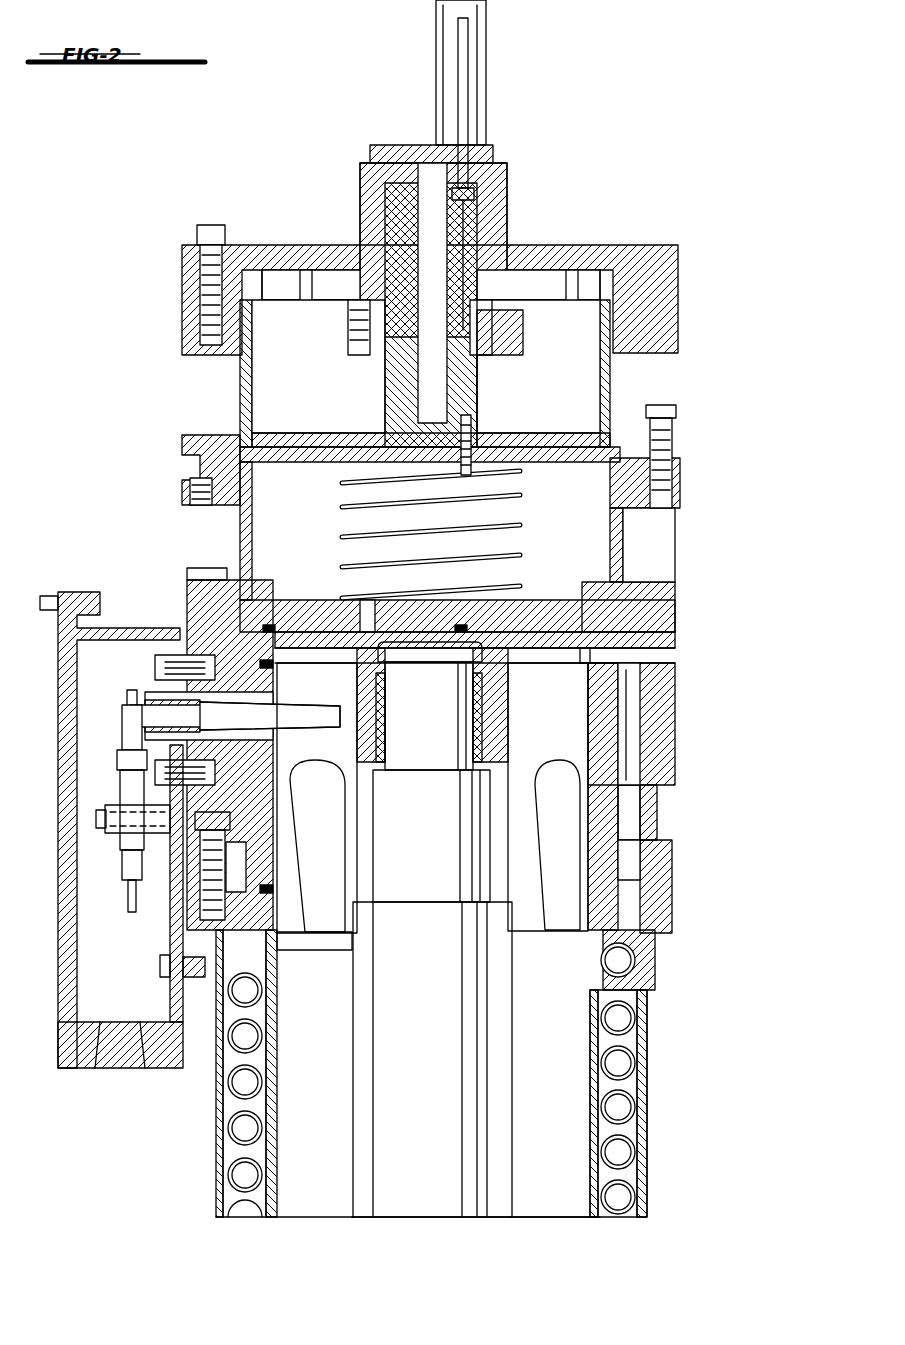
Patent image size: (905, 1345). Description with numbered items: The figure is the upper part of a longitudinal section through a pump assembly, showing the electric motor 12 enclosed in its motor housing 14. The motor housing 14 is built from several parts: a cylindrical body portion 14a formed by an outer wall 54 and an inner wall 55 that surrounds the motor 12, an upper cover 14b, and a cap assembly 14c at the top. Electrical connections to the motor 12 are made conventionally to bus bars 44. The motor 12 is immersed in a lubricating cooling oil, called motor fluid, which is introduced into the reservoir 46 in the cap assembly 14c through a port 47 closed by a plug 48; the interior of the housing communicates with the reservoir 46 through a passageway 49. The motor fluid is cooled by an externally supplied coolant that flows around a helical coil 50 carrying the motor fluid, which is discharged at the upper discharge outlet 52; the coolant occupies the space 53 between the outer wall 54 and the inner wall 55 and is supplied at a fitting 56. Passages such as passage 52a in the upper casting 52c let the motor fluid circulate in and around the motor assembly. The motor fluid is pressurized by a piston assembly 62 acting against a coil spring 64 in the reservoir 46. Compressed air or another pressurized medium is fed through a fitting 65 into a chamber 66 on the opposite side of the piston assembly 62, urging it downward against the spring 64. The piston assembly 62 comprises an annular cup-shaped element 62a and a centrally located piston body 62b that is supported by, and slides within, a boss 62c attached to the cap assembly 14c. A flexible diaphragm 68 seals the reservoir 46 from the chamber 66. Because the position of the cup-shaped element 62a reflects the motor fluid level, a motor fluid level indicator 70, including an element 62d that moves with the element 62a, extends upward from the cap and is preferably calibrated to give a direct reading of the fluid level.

The motor fluid level indicator 70 is at (490, 55).
The indicator element 62d is at (468, 112).
The fitting 65 is at (330, 245).
The chamber 66 is at (302, 365).
The piston assembly 62 is at (300, 435).
The annular cup-shaped element 62a is at (530, 433).
The piston body 62b is at (480, 390).
The boss 62c is at (515, 348).
The flexible diaphragm 68 is at (628, 378).
The cap assembly 14c is at (640, 412).
The port 47 is at (185, 475).
The plug 48 is at (200, 505).
The coil spring 64 is at (525, 522).
The reservoir 46 is at (460, 555).
The passageway 49 is at (235, 749).
The bus bars 44 is at (128, 900).
The fitting 56 is at (160, 970).
The electric motor 12 is at (650, 1060).
The upper casting 52c is at (490, 750).
The passage 52a is at (640, 730).
The upper cover 14b is at (670, 775).
The upper discharge outlet 52 is at (640, 935).
The inner wall 55 is at (268, 1135).
The outer wall 54 is at (216, 1115).
The space 53 is at (235, 1172).
The helical coil 50 is at (646, 1152).
The motor housing 14 is at (648, 1173).
The cylindrical body portion 14a is at (650, 1195).